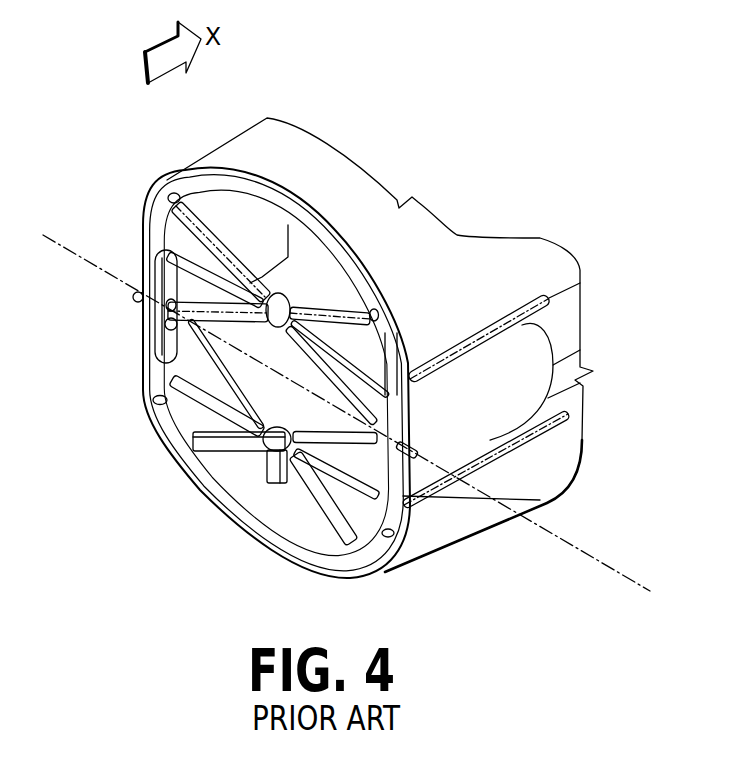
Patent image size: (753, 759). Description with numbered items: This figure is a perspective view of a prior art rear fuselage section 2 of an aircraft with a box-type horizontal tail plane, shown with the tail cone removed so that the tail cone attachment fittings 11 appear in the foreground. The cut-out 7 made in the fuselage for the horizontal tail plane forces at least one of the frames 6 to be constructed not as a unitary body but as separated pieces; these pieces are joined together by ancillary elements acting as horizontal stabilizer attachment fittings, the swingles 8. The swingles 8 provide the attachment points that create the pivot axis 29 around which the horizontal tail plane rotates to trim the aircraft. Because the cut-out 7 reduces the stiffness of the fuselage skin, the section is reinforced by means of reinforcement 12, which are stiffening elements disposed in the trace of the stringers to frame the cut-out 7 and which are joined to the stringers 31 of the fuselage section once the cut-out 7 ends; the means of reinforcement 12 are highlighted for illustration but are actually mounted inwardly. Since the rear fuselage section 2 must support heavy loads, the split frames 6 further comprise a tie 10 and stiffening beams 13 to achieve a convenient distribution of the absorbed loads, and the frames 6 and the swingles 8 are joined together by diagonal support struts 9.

The rear fuselage section 2 is at (448, 132).
The frames 6 is at (245, 193).
The cut-out 7 is at (537, 338).
The swingles 8 is at (397, 423).
The diagonal support struts 9 is at (340, 380).
The tie 10 is at (315, 492).
The tail cone attachment fittings 11 is at (157, 190).
The means of reinforcement 12 is at (200, 207).
The stiffening beams 13 is at (202, 398).
The pivot axis 29 is at (598, 563).
The stringers 31 is at (562, 290).